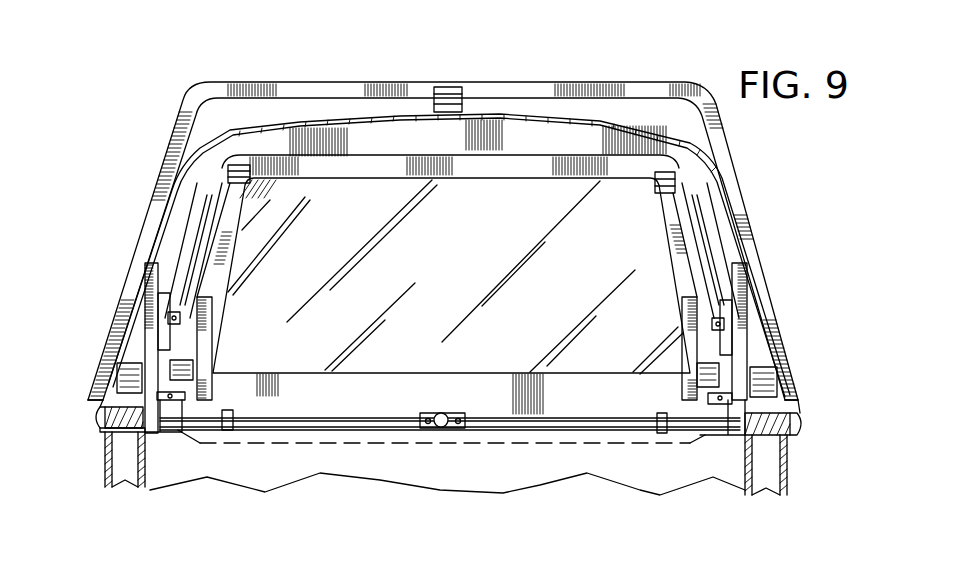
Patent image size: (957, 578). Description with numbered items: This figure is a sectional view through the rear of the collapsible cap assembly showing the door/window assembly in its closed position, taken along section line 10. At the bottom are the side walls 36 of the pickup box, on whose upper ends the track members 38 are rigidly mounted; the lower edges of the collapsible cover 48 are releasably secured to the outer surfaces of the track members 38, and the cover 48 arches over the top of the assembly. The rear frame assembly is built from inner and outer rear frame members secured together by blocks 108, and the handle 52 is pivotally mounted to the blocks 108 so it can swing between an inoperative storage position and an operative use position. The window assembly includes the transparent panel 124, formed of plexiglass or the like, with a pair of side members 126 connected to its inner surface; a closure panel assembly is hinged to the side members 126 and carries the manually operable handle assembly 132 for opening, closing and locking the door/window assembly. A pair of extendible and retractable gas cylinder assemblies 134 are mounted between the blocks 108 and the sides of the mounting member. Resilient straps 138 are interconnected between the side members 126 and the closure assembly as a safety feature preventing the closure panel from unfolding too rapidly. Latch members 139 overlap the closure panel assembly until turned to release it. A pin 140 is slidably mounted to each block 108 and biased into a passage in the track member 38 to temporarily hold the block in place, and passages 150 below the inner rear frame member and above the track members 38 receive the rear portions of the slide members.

The section line 10- 10 is at (270, 70).
The side walls 36 is at (790, 470).
The track members 38 is at (778, 408).
The collapsible cover 48 is at (522, 114).
The handle 52 is at (603, 84).
The blocks 108 is at (763, 367).
The transparent panel 124 is at (461, 266).
The side members 126 is at (233, 250).
The handle assembly 132 is at (452, 412).
The gas cylinder assemblies 134 is at (706, 248).
The resilient straps 138 is at (212, 353).
The latch members 139 is at (730, 412).
The pin 140 is at (323, 415).
The passages 150 is at (112, 400).